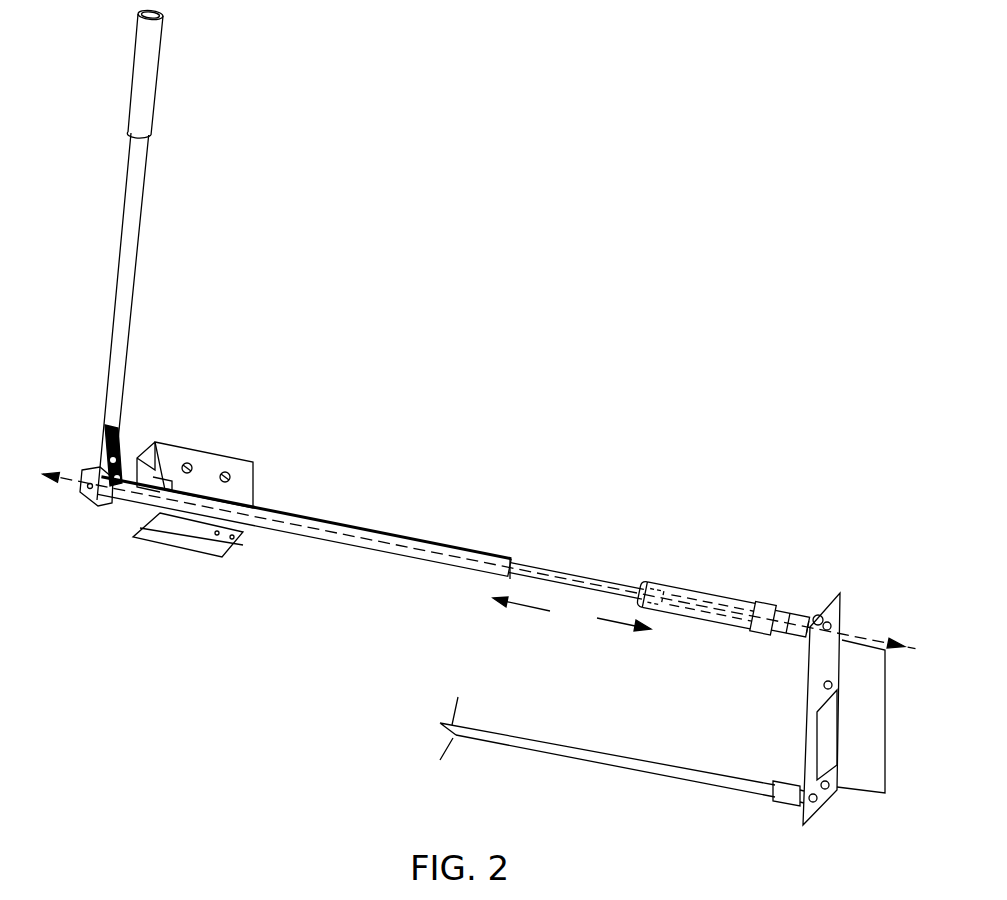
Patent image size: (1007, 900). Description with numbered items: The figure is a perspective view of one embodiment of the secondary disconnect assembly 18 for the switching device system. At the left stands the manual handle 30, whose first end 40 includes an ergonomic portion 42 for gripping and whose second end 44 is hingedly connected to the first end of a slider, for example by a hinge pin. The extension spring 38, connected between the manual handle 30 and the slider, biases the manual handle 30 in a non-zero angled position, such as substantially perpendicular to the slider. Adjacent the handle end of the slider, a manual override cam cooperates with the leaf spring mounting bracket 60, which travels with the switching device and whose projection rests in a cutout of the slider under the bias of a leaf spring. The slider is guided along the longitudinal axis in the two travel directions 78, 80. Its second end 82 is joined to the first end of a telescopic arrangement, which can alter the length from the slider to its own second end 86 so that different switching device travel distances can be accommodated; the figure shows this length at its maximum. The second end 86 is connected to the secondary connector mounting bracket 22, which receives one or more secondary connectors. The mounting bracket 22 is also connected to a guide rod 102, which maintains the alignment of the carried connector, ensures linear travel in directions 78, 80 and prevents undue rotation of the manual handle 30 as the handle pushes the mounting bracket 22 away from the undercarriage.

The secondary disconnect assembly 18 is at (92, 374).
The secondary connector mounting bracket 22 is at (836, 640).
The manual handle 30 is at (120, 238).
The extension spring 38 is at (122, 458).
The first end of the manual handle 40 is at (138, 15).
The ergonomic portion 42 is at (163, 72).
The second end of the manual handle 44 is at (98, 500).
The leaf spring mounting bracket 60 is at (202, 466).
The direction 78 is at (618, 624).
The direction 80 is at (540, 612).
The second end of the slider 82 is at (512, 560).
The second end of the telescopic arrangement 86 is at (814, 612).
The guide rod 102 is at (597, 758).